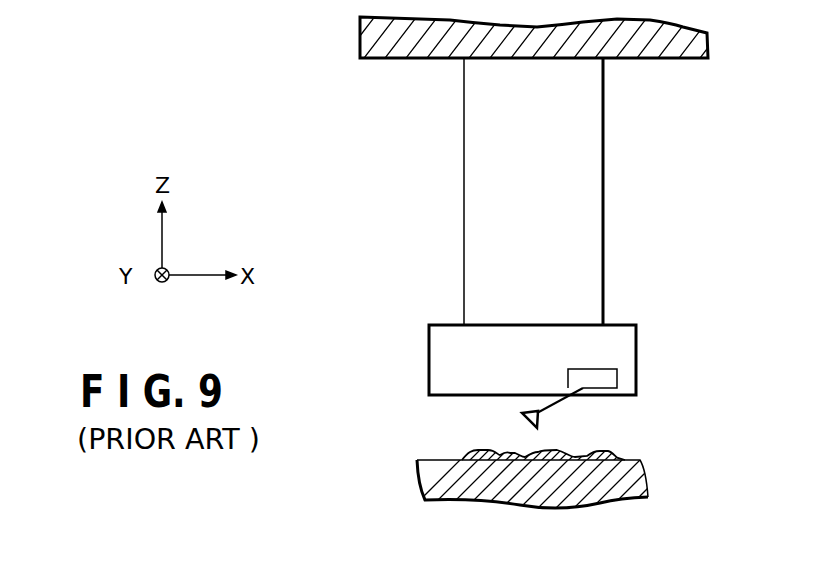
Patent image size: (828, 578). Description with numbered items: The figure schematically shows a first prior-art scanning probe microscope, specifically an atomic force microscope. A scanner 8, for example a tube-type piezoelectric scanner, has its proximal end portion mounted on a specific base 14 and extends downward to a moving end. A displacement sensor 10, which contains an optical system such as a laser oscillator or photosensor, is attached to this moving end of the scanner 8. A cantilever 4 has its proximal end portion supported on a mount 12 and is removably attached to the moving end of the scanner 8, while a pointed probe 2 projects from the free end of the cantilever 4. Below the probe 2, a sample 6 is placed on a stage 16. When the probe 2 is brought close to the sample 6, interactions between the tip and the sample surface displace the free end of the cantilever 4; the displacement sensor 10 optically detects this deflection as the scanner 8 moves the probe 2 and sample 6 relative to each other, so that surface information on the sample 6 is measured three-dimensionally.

The probe 2 is at (523, 414).
The cantilever 4 is at (548, 413).
The sample 6 is at (465, 460).
The scanner 8 is at (604, 153).
The displacement sensor 10 is at (512, 325).
The mount 12 is at (617, 373).
The base 14 is at (395, 60).
The stage 16 is at (635, 460).